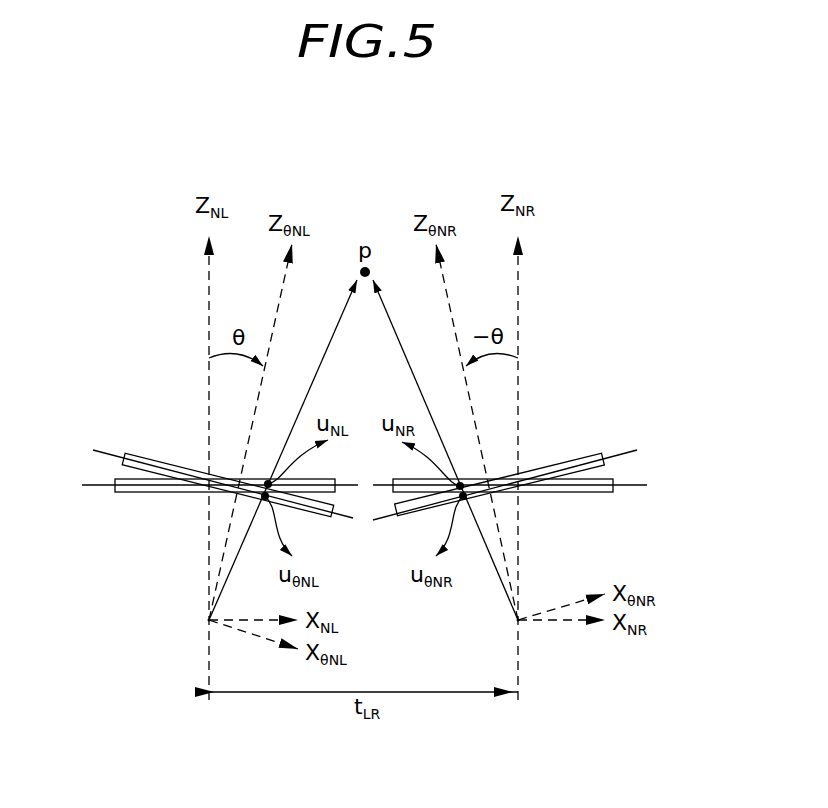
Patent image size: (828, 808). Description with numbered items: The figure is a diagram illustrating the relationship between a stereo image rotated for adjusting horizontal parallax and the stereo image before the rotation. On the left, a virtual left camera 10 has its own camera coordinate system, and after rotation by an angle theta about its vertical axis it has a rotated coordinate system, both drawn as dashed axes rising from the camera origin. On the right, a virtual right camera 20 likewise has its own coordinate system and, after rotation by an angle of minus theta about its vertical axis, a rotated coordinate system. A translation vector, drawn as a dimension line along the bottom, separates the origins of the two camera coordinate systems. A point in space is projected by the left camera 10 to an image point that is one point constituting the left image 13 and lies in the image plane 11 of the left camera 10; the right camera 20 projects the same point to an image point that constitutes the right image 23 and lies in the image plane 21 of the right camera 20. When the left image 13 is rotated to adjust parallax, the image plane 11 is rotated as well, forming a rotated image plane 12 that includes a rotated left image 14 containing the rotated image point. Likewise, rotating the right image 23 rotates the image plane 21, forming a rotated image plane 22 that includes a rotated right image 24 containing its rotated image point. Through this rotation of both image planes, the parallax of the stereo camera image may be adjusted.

The virtual left camera 10 is at (207, 621).
The image plane of the left camera 11 is at (100, 483).
The rotated image plane 12 is at (108, 452).
The left image 13 is at (157, 492).
The rotated left image 14 is at (163, 457).
The virtual right camera 20 is at (520, 622).
The image plane of the right camera 21 is at (627, 486).
The rotated image plane 22 is at (620, 450).
The right image 23 is at (571, 493).
The rotated right image 24 is at (568, 458).